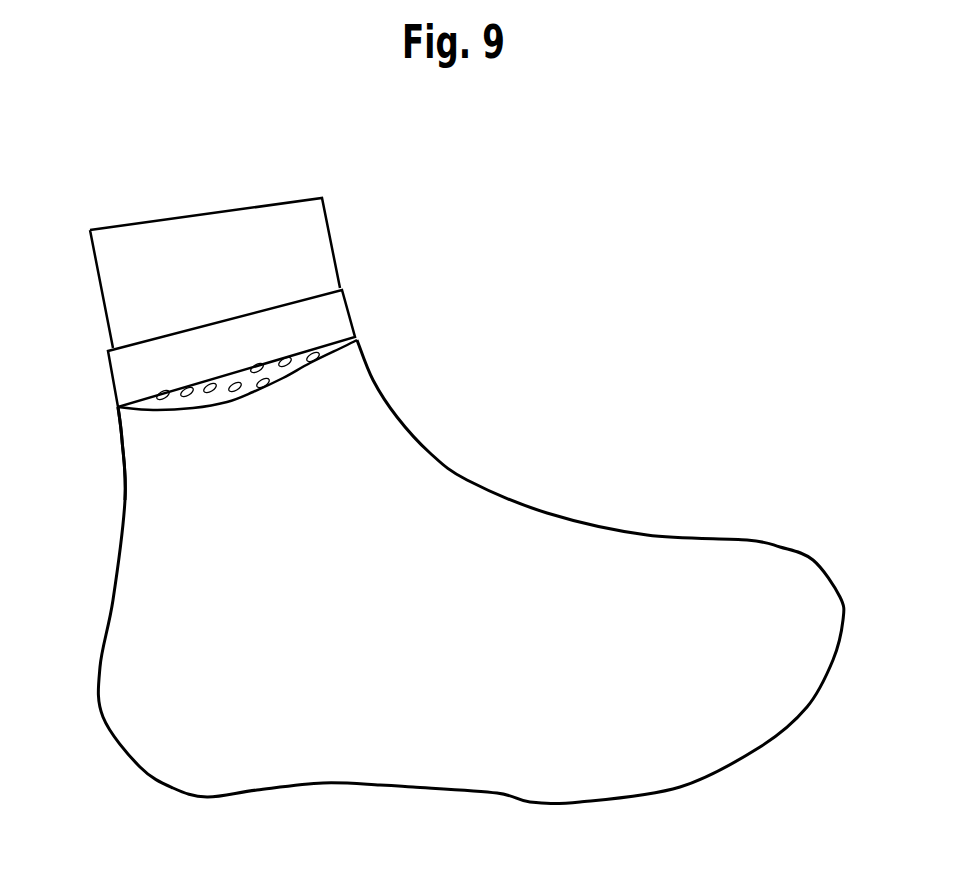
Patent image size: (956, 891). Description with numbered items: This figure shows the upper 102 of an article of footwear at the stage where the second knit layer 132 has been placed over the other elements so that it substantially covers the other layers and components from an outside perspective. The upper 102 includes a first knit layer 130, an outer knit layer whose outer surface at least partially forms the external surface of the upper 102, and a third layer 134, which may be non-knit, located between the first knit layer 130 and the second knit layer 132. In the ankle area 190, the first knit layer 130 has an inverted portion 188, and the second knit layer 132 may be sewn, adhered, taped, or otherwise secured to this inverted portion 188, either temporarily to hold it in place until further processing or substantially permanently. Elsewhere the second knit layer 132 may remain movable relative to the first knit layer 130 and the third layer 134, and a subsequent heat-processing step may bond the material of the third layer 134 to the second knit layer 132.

The upper 102 is at (742, 685).
The second knit layer 132 is at (640, 557).
The inverted portion 188 is at (343, 308).
The first knit layer 130 is at (133, 373).
The third layer 134 is at (277, 370).
The ankle area 190 is at (153, 438).